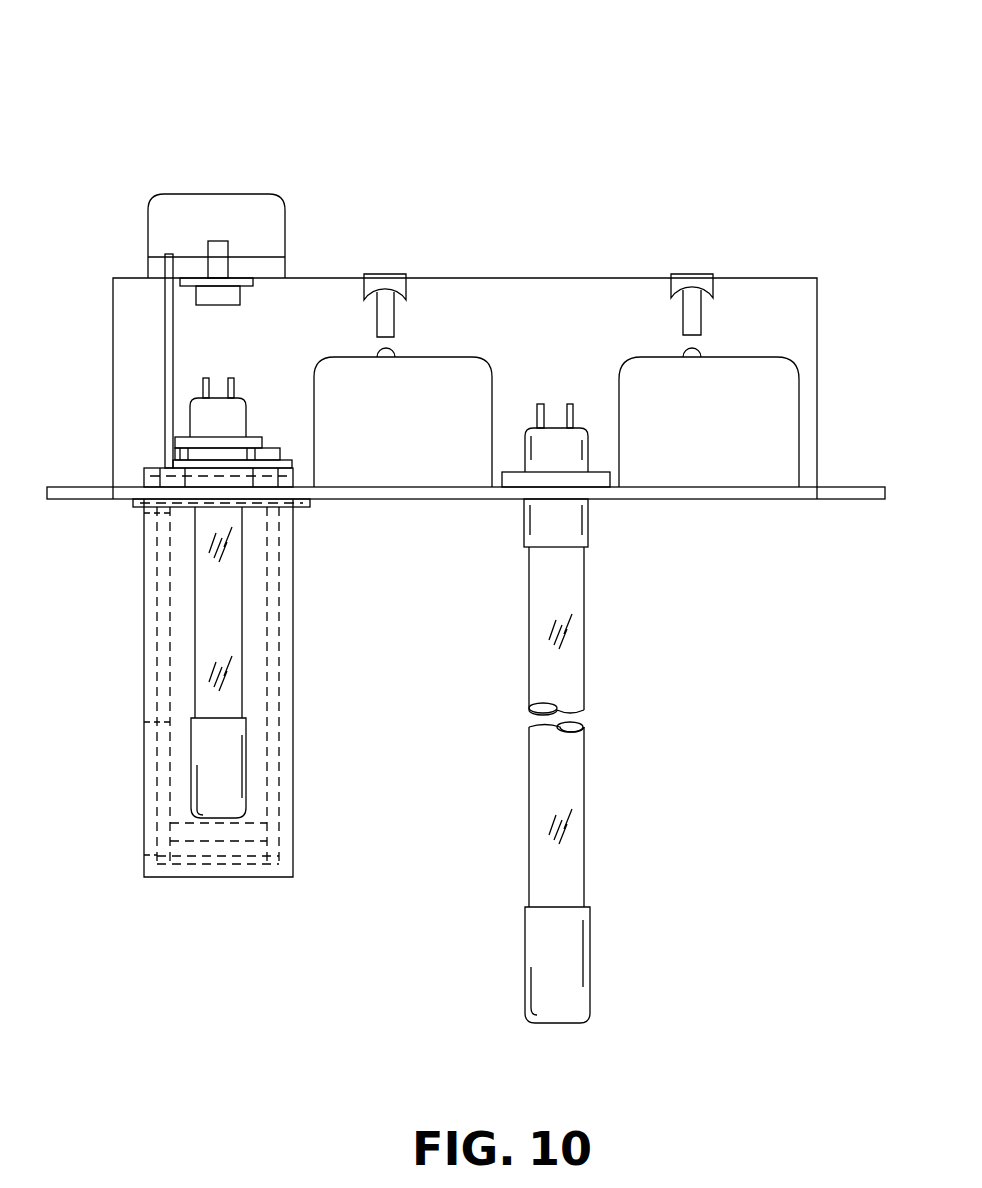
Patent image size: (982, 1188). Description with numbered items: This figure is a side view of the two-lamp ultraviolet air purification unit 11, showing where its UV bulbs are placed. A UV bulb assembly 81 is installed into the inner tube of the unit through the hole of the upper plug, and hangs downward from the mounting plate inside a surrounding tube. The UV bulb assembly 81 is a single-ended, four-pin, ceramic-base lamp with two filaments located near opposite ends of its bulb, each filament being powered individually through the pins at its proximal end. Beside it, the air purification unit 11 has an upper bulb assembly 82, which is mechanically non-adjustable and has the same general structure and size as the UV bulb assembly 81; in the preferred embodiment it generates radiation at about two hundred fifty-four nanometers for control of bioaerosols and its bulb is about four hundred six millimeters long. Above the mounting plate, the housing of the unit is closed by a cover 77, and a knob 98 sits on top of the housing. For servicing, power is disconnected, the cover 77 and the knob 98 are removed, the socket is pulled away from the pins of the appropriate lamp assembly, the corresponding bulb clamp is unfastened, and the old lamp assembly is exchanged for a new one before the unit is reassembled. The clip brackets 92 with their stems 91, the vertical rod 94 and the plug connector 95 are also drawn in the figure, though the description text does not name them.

The air purification unit 11 is at (740, 130).
The cover 77 is at (600, 278).
The UV bulb assembly 81 is at (243, 626).
The upper bulb assembly 82 is at (584, 778).
The clip stem 91 is at (398, 320).
The clip 92 is at (390, 274).
The rod 94 is at (215, 241).
The plug connector 95 is at (245, 280).
The knob 98 is at (228, 194).